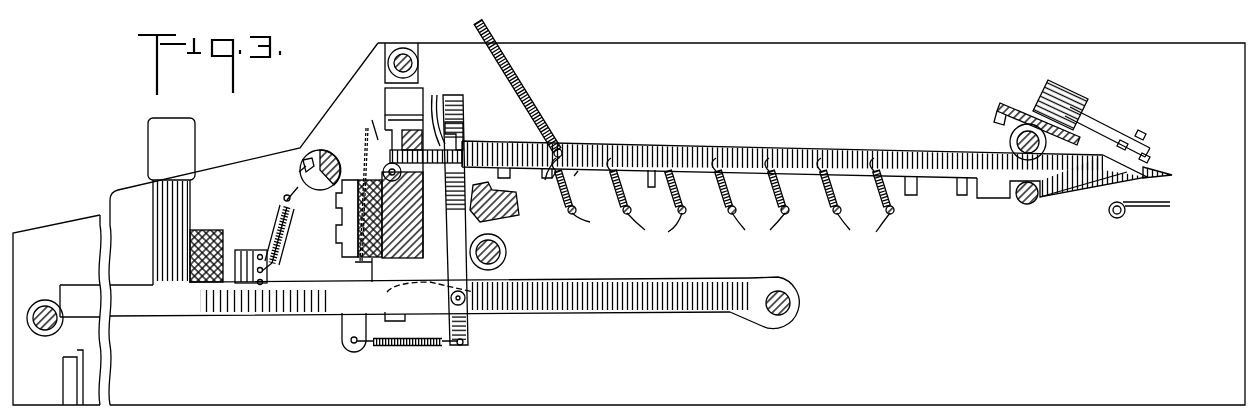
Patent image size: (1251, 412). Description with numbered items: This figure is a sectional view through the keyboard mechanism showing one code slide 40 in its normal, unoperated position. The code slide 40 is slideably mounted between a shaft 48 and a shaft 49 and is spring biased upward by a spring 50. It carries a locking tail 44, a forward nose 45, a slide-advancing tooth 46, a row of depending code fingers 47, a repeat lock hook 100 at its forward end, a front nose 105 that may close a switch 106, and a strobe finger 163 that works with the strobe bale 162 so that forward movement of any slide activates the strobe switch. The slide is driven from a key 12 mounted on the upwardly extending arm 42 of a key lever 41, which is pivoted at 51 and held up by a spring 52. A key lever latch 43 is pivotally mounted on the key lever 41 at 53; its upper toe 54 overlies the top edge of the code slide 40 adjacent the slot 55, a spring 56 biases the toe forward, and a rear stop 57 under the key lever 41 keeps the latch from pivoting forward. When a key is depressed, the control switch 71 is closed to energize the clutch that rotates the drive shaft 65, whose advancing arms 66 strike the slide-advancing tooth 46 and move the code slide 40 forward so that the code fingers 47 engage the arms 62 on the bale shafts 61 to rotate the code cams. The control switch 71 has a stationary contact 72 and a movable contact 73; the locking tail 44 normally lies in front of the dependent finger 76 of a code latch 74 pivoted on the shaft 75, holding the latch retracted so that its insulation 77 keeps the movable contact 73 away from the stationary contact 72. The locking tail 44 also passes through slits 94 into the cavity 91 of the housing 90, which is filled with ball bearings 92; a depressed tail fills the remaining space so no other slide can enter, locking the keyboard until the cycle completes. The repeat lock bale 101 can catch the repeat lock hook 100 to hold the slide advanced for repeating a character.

The key 12 is at (150, 155).
The code slide 40 is at (808, 148).
The key lever 41 is at (552, 300).
The upwardly extending arm 42 is at (160, 222).
The key lever latch 43 is at (459, 220).
The locking tail 44 is at (411, 131).
The forward nose 45 is at (1118, 160).
The slide-advancing tooth 46 is at (543, 135).
The code fingers 47 is at (652, 160).
The shaft 48 is at (1027, 205).
The shaft 49 is at (1015, 137).
The spring 50 is at (530, 113).
The pivot 51 is at (805, 311).
The spring 52 is at (277, 226).
The pivot 53 is at (465, 305).
The upper toe 54 is at (461, 128).
The slot 55 is at (438, 140).
The spring 56 is at (398, 350).
The rear stop 57 is at (390, 315).
The shaft 61 is at (731, 229).
The arm 62 is at (738, 172).
The drive shaft 65 is at (510, 241).
The advancing arms 66 is at (516, 220).
The control switch 71 is at (340, 141).
The stationary contact 72 is at (348, 249).
The movable contact 73 is at (377, 138).
The code latch 74 is at (390, 78).
The shaft 75 is at (406, 60).
The dependent finger 76 is at (378, 132).
The insulation 77 is at (421, 96).
The housing 90 is at (370, 259).
The cavity 91 is at (404, 215).
The ball bearings 92 is at (350, 195).
The slits 94 is at (413, 173).
The repeat lock hook 100 is at (1116, 178).
The repeat lock bale 101 is at (1148, 207).
The front nose 105 is at (1172, 173).
The switch 106 is at (1070, 101).
The strobe bale 162 is at (580, 170).
The strobe finger 163 is at (558, 170).